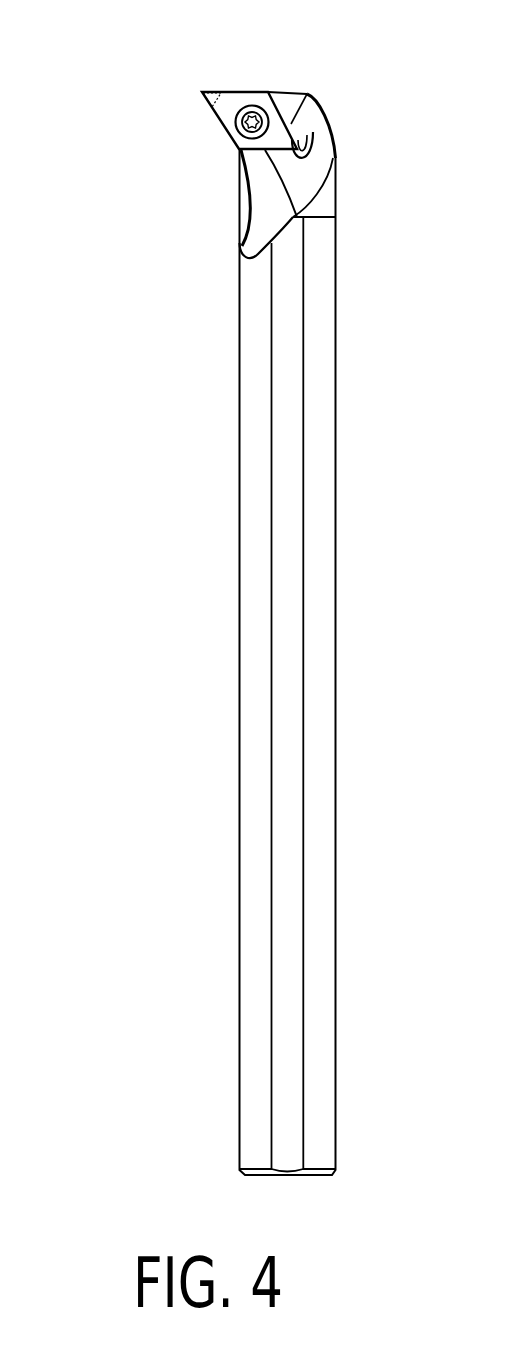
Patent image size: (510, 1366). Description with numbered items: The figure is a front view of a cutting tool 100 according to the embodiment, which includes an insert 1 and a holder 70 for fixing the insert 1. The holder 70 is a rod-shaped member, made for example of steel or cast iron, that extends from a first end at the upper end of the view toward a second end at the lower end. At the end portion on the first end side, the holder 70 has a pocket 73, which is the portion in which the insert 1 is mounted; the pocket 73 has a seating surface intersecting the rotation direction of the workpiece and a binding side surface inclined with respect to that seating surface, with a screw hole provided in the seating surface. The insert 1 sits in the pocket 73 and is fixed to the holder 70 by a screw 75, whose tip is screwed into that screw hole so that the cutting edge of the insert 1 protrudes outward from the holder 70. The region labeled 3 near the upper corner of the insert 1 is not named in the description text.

The cutting tool 100 is at (112, 44).
The holder 70 is at (222, 429).
The pocket 73 is at (262, 152).
The screw 75 is at (255, 118).
The insert 1 is at (216, 118).
The cutting edge 3 is at (203, 90).